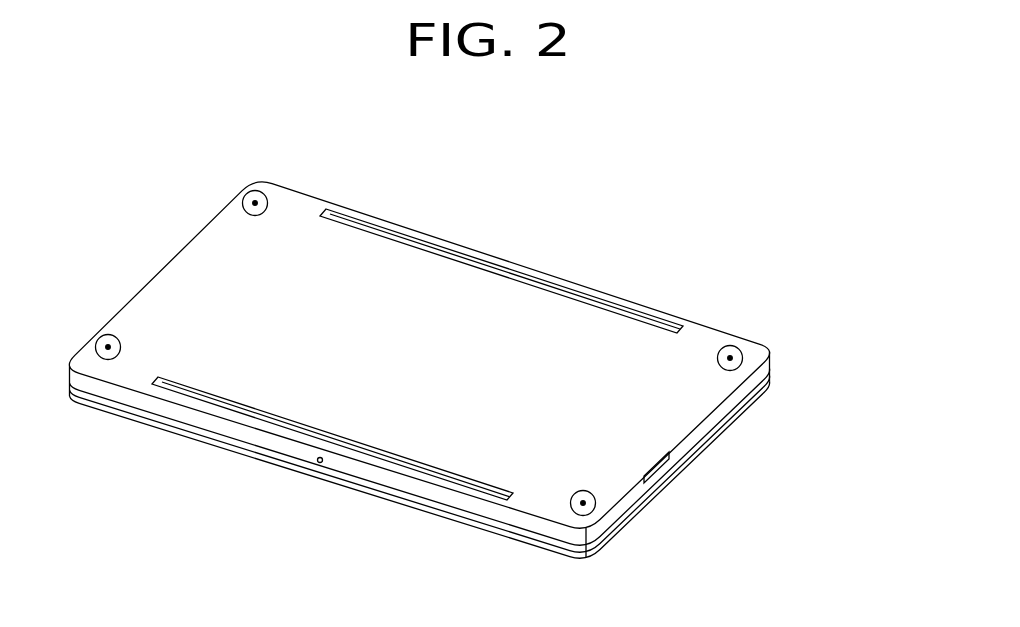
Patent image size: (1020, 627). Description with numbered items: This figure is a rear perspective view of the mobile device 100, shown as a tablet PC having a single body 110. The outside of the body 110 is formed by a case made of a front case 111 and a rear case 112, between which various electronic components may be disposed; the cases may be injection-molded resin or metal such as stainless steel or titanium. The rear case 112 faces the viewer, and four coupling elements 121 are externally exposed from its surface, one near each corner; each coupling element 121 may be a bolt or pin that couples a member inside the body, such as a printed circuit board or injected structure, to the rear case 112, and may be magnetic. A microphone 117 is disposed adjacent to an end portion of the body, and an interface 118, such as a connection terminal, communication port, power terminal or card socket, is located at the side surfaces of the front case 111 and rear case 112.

The mobile device 100 is at (557, 217).
The body 110 is at (852, 325).
The front case 111 is at (753, 392).
The rear case 112 is at (763, 364).
The microphone 117 is at (318, 463).
The interface 118 is at (660, 466).
The coupling element 121 is at (729, 346).